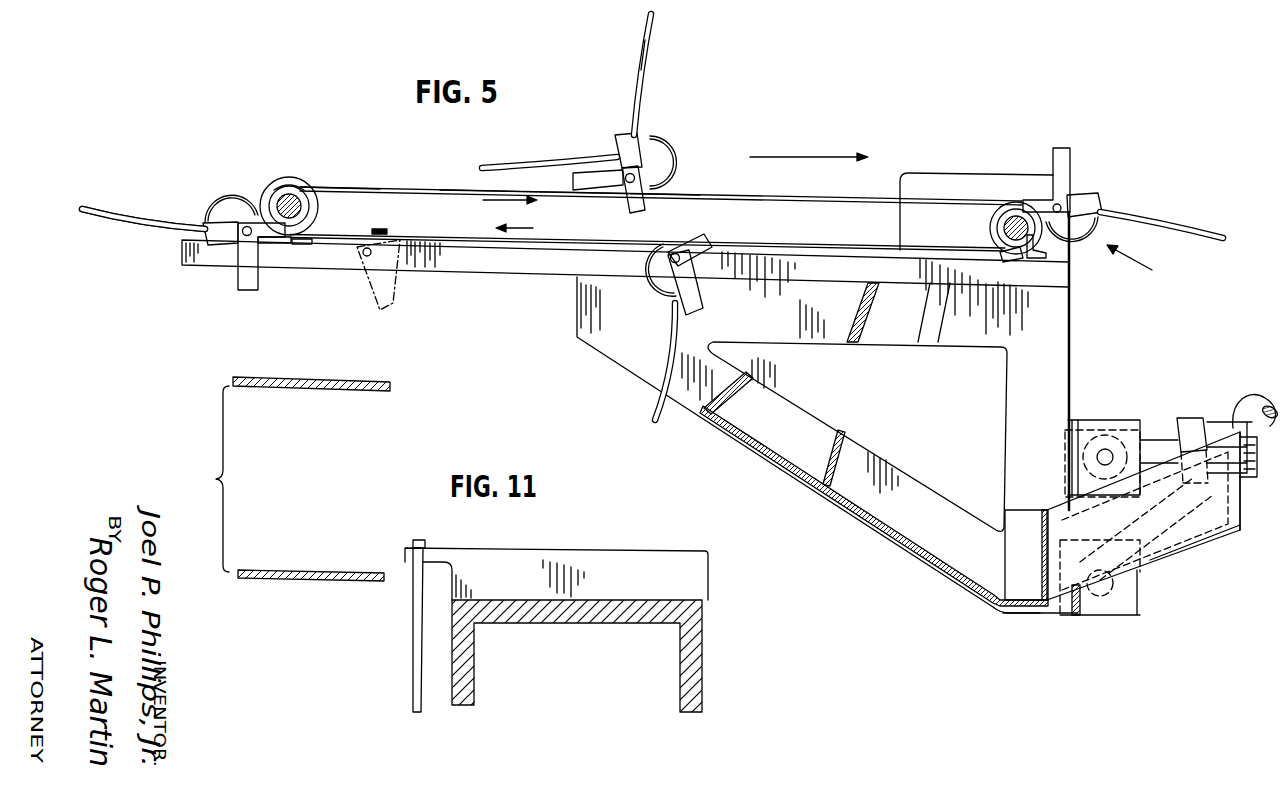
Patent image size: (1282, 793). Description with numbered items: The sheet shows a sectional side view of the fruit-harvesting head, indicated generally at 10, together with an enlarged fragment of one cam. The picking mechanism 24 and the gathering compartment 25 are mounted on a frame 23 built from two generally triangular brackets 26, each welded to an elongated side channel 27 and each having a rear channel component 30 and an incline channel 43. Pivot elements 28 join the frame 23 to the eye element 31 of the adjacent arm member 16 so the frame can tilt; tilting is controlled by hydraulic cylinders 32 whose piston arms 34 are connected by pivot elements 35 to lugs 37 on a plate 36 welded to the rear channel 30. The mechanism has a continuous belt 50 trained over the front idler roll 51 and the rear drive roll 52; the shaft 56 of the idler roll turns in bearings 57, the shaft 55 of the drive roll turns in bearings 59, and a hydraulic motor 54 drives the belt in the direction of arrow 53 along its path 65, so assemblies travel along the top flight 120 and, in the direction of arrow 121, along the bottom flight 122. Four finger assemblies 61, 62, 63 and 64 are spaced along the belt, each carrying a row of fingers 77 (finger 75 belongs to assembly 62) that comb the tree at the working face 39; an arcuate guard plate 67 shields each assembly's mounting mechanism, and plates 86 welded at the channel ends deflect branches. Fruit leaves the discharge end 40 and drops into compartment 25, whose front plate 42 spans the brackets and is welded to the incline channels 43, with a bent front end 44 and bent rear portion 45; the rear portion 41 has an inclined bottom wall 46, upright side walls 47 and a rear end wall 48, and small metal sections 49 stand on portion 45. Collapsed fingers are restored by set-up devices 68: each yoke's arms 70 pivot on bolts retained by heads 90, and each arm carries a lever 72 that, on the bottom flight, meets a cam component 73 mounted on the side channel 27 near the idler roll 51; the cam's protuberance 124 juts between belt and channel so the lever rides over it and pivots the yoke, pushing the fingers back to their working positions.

In FIG. 5, the stacking apparatus 10 is at (221, 164).
In FIG. 5, the arm member 16 is at (1240, 392).
In FIG. 5, the frame 23 is at (695, 418).
In FIG. 5, the picking mechanism 24 is at (367, 175).
In FIG. 5, the gathering compartment 25 is at (1155, 526).
In FIG. 5, the triangular bracket 26 is at (780, 465).
In FIG. 5, the elongated channel 27 is at (502, 270).
In FIG. 11, the elongated channel 27 is at (703, 660).
In FIG. 5, the pivot element 28 is at (1102, 598).
In FIG. 5, the rear channel component 30 is at (1071, 340).
In FIG. 5, the eye element 31 is at (1085, 618).
In FIG. 5, the hydraulic cylinder 32 is at (1208, 418).
In FIG. 5, the piston arm 34 is at (1160, 440).
In FIG. 5, the pivot element 35 is at (1097, 457).
In FIG. 5, the plate 36 is at (1070, 430).
In FIG. 5, the lug 37 is at (1098, 420).
In FIG. 5, the working face 39 is at (432, 191).
In FIG. 5, the discharge end 40 is at (1139, 266).
In FIG. 5, the rear portion 41 is at (1175, 560).
In FIG. 5, the plate 42 is at (905, 551).
In FIG. 5, the incline channel 43 is at (825, 432).
In FIG. 5, the front end 44 is at (845, 452).
In FIG. 5, the rear portion 45 is at (1022, 615).
In FIG. 5, the inclined bottom wall 46 is at (1210, 537).
In FIG. 5, the upright side wall 47 is at (1085, 482).
In FIG. 5, the upright rear end wall 48 is at (1241, 500).
In FIG. 5, the small metal section 49 is at (1042, 556).
In FIG. 5, the continuous belt 50 is at (656, 225).
In FIG. 11, the continuous belt 50 is at (294, 484).
In FIG. 5, the idler roll 51 is at (298, 209).
In FIG. 5, the drive roll 52 is at (995, 241).
In FIG. 5, the arrow 53 is at (809, 145).
In FIG. 5, the hydraulic motor 54 is at (970, 175).
In FIG. 5, the shaft 55 is at (1036, 258).
In FIG. 5, the shaft 56 is at (293, 199).
In FIG. 5, the bearing 57 is at (280, 194).
In FIG. 5, the bearing 59 is at (1005, 259).
In FIG. 5, the finger assembly 61 is at (118, 211).
In FIG. 5, the finger assembly 62 is at (631, 74).
In FIG. 5, the finger assembly 63 is at (1200, 240).
In FIG. 5, the finger assembly 64 is at (653, 400).
In FIG. 5, the path 65 is at (510, 214).
In FIG. 5, the guard plate 67 is at (212, 193).
In FIG. 5, the set-up device 68 is at (252, 292).
In FIG. 5, the yoke arm 70 is at (240, 278).
In FIG. 5, the lever 72 is at (282, 244).
In FIG. 11, the lever 72 is at (393, 609).
In FIG. 5, the cam component 73 is at (382, 231).
In FIG. 11, the cam component 73 is at (582, 552).
In FIG. 5, the finger 75 is at (640, 63).
In FIG. 5, the finger 77 is at (137, 231).
In FIG. 5, the plate 86 is at (214, 245).
In FIG. 5, the bolt head 90 is at (246, 236).
In FIG. 5, the top flight 120 is at (392, 186).
In FIG. 11, the top flight 120 is at (360, 382).
In FIG. 5, the arrow 121 is at (560, 270).
In FIG. 11, the bottom flight 122 is at (298, 582).
In FIG. 11, the protuberance 124 is at (410, 548).